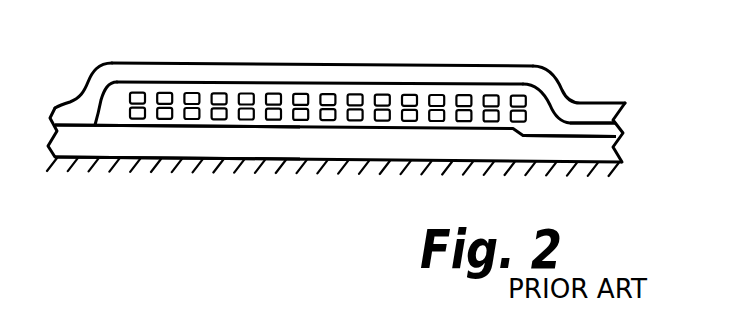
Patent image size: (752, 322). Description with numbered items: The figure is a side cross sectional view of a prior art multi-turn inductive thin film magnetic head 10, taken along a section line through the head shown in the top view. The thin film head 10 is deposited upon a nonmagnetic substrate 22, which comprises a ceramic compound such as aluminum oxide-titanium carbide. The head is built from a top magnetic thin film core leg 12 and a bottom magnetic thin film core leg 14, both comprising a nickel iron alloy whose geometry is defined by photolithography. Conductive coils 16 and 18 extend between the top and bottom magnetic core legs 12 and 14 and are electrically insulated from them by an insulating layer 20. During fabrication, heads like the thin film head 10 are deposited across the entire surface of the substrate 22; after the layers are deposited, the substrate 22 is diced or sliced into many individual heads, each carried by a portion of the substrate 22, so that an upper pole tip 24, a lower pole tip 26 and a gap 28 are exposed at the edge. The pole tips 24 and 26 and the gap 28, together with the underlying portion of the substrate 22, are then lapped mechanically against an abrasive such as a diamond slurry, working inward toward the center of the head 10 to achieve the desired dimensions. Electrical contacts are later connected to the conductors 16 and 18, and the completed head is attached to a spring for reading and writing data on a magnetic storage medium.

The multi-turn inductive thin film magnetic head 10 is at (549, 57).
The top magnetic thin film core leg 12 is at (508, 75).
The bottom magnetic thin film core leg 14 is at (100, 140).
The conductive coil 16 is at (352, 93).
The conductive coil 18 is at (434, 98).
The insulating layer 20 is at (268, 89).
The nonmagnetic substrate 22 is at (321, 168).
The upper pole tip 24 is at (558, 97).
The lower pole tip 26 is at (553, 147).
The gap 28 is at (598, 130).